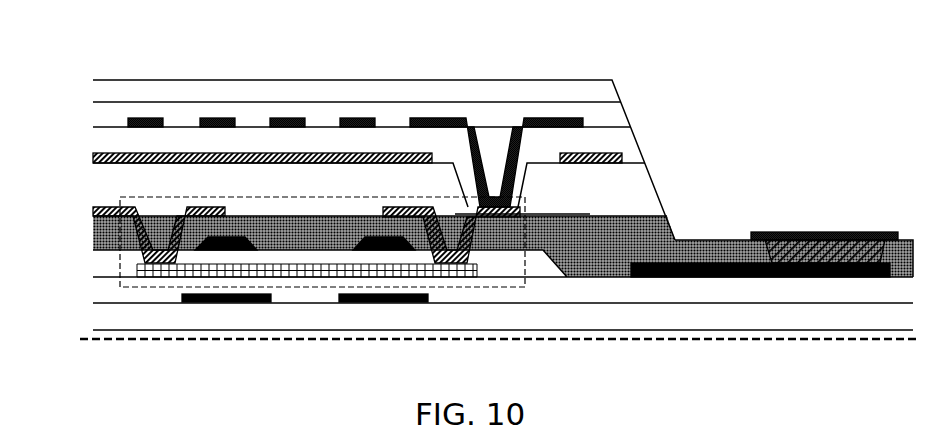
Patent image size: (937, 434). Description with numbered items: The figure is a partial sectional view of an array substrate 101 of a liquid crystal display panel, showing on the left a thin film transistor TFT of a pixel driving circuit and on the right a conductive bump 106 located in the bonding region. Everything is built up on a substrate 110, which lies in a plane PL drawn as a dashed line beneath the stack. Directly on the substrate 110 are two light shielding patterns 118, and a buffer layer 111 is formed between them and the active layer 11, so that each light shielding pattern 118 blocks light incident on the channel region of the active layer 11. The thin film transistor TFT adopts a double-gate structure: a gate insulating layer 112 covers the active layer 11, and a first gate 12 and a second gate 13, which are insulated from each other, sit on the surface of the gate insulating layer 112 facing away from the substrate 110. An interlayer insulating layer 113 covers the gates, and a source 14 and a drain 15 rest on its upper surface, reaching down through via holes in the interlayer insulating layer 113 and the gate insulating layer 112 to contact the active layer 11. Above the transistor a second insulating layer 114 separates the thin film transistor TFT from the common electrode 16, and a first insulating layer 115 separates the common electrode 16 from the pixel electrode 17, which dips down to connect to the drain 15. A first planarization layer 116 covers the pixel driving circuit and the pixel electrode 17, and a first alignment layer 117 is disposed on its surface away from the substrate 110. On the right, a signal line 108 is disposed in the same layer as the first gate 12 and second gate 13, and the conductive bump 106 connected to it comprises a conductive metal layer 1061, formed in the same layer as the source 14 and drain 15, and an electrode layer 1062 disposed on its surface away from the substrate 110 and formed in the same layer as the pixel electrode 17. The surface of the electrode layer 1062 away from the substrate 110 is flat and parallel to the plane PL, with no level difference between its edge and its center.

The array substrate 101 is at (66, 28).
The first alignment layer 117 is at (105, 88).
The first planarization layer 116 is at (105, 118).
The first insulating layer 115 is at (105, 143).
The second insulating layer 114 is at (105, 182).
The interlayer insulating layer 113 is at (107, 235).
The gate insulating layer 112 is at (107, 265).
The buffer layer 111 is at (107, 297).
The substrate 110 is at (107, 316).
The common electrode 16 is at (249, 160).
The pixel electrode 17 is at (428, 125).
The source 14 is at (196, 207).
The drain 15 is at (418, 207).
The first gate 12 is at (238, 237).
The second gate 13 is at (378, 237).
The active layer 11 is at (295, 270).
The light shielding pattern 118 is at (227, 303).
The signal line 108 is at (738, 275).
The conductive bump 106 is at (824, 214).
The conductive metal layer 1061 is at (862, 190).
The electrode layer 1062 is at (823, 242).
The thin film transistor TFT is at (138, 287).
The plane PL is at (850, 340).